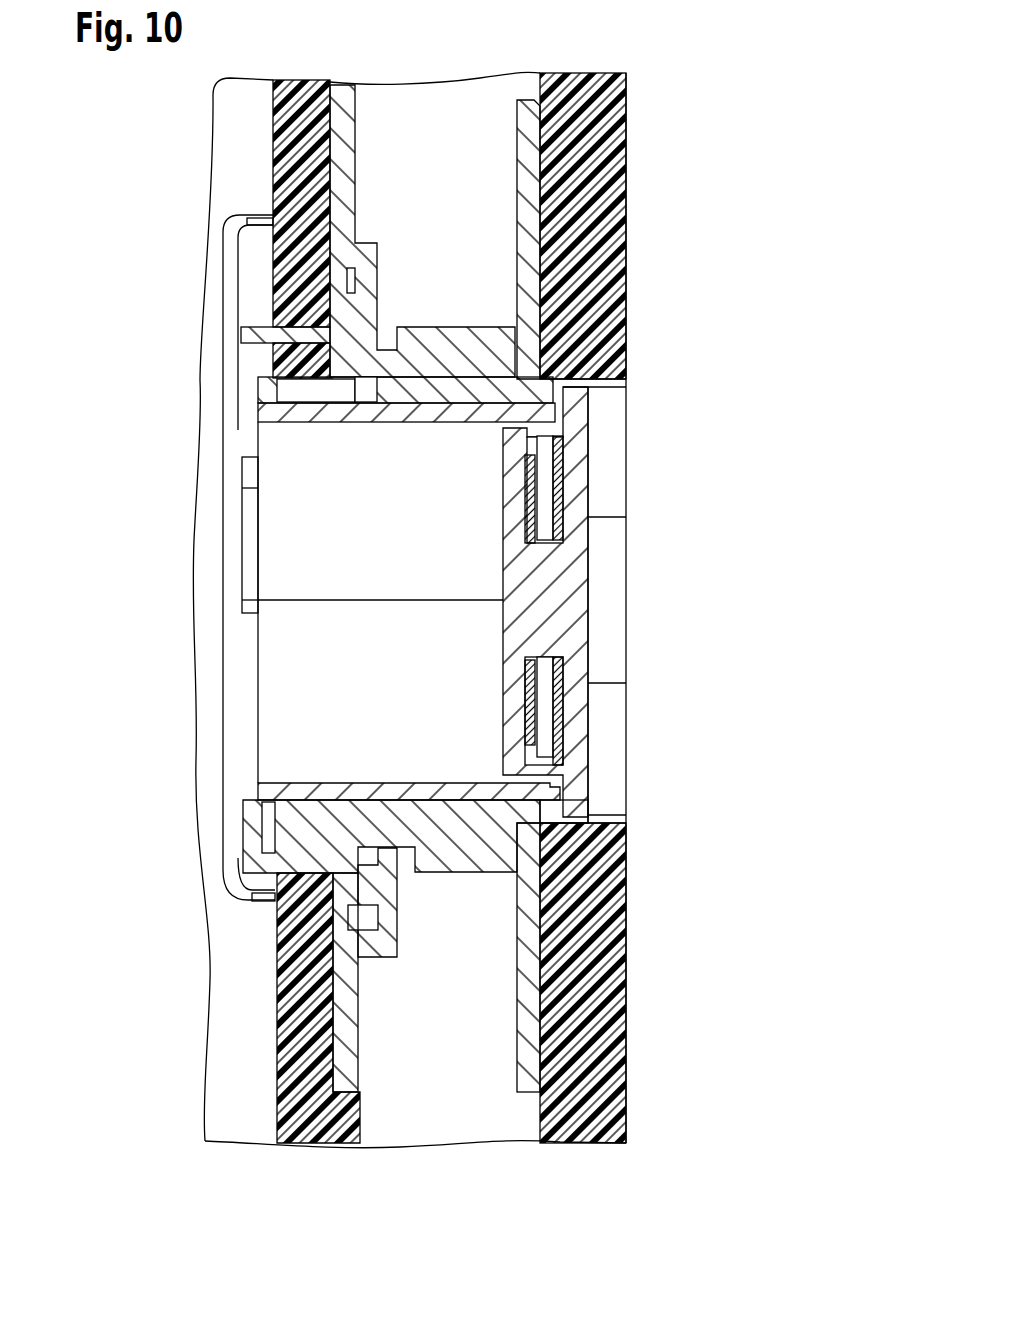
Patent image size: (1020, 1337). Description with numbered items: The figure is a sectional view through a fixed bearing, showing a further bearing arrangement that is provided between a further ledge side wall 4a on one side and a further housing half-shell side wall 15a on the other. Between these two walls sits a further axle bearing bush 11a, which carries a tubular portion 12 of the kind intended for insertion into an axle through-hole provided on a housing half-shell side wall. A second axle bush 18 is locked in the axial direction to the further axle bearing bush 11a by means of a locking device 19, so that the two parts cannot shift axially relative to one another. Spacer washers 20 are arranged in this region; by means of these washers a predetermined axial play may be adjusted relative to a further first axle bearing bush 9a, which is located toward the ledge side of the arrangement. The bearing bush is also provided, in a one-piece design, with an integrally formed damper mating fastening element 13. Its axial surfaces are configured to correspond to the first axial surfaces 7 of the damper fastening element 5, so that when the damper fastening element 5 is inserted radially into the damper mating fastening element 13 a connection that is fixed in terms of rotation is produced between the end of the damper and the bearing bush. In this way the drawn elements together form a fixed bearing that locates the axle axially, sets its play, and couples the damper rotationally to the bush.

The further ledge side wall 4a is at (297, 82).
The further housing half-shell side wall 15a is at (578, 80).
The further axle bearing bush 11a is at (527, 180).
The tubular portion 12 is at (533, 391).
The spacer washers 20 is at (565, 460).
The locking device 19 is at (568, 598).
The first axial surfaces 7 is at (410, 820).
The second axle bush 18 is at (277, 793).
The damper mating fastening element 13 is at (540, 812).
The damper fastening element 5 is at (365, 868).
The further first axle bearing bush 9a is at (347, 998).